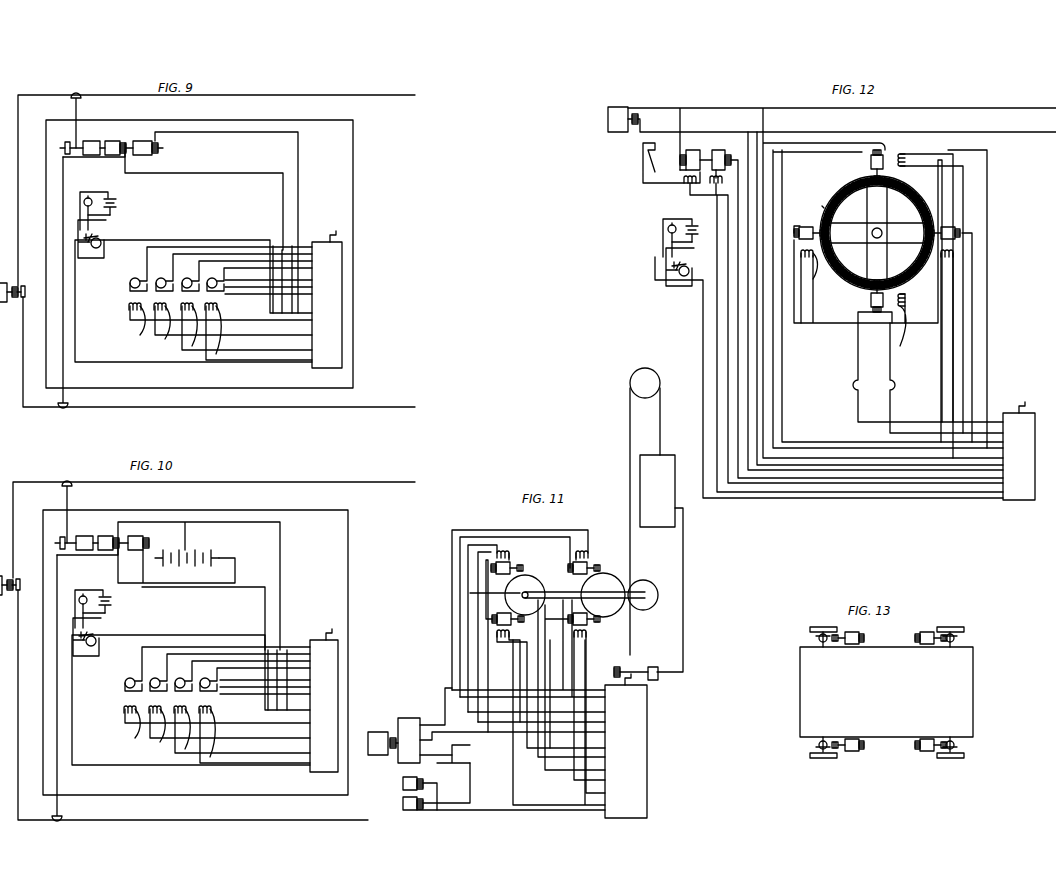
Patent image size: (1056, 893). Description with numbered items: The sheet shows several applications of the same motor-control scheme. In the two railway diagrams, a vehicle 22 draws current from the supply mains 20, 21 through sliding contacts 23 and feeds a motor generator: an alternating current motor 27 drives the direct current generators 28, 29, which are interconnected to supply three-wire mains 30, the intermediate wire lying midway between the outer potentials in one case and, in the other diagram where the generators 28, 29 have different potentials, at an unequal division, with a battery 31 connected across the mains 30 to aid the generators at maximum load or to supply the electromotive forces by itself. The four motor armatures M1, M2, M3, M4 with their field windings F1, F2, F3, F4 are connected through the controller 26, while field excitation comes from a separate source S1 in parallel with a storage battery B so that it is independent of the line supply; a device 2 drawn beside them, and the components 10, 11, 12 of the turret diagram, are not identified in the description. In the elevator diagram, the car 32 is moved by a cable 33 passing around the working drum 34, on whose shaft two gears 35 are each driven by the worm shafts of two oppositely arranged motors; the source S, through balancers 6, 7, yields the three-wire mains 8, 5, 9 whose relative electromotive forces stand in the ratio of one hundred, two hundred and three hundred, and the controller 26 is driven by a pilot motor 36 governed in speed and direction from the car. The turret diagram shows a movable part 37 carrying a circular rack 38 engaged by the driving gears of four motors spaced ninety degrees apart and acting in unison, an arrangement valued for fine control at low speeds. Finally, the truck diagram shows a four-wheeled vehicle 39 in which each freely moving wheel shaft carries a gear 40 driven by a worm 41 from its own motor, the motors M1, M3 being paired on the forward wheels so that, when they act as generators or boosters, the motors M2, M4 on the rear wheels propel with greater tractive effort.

In FIG. 9, the relay 2 is at (97, 239).
In FIG. 10, the relay 2 is at (91, 637).
In FIG. 12, the relay 2 is at (829, 373).
In FIG. 11, the main 5 is at (452, 768).
In FIG. 11, the balancer 6 is at (403, 784).
In FIG. 11, the balancer 7 is at (403, 804).
In FIG. 11, the main 8 is at (430, 700).
In FIG. 11, the main 9 is at (455, 812).
In FIG. 12, the relay 10 is at (696, 152).
In FIG. 12, the relay 11 is at (857, 314).
In FIG. 12, the relay coils 12 is at (712, 192).
In FIG. 9, the supply main 20 is at (216, 182).
In FIG. 10, the supply main 20 is at (214, 522).
In FIG. 9, the supply main 21 is at (152, 408).
In FIG. 10, the supply main 21 is at (193, 706).
In FIG. 9, the vehicle 22 is at (356, 209).
In FIG. 10, the vehicle 22 is at (214, 652).
In FIG. 9, the sliding contact 23 is at (82, 100).
In FIG. 10, the sliding contact 23 is at (79, 651).
In FIG. 9, the controller 26 is at (327, 299).
In FIG. 10, the controller 26 is at (324, 700).
In FIG. 11, the controller 26 is at (626, 746).
In FIG. 12, the controller 26 is at (1019, 451).
In FIG. 9, the alternating current motor 27 is at (92, 149).
In FIG. 10, the alternating current motor 27 is at (86, 545).
In FIG. 9, the direct current generator 28 is at (113, 148).
In FIG. 10, the direct current generator 28 is at (103, 532).
In FIG. 9, the direct current generator 29 is at (144, 148).
In FIG. 10, the direct current generator 29 is at (145, 537).
In FIG. 9, the three-wire mains 30 is at (212, 158).
In FIG. 10, the three-wire mains 30 is at (202, 616).
In FIG. 10, the battery 31 is at (187, 550).
In FIG. 11, the car 32 is at (661, 563).
In FIG. 11, the cable 33 is at (630, 437).
In FIG. 11, the working drum 34 is at (646, 586).
In FIG. 11, the gear 35 is at (565, 595).
In FIG. 11, the pilot motor 36 is at (653, 667).
In FIG. 12, the movable part 37 is at (877, 233).
In FIG. 12, the circular rack 38 is at (826, 206).
In FIG. 13, the truck 39 is at (886, 692).
In FIG. 13, the gear 40 is at (812, 636).
In FIG. 13, the worm 41 is at (822, 630).
In FIG. 9, the source S is at (12, 292).
In FIG. 10, the source S is at (10, 585).
In FIG. 11, the source S is at (383, 743).
In FIG. 12, the source S is at (624, 119).
In FIG. 9, the source of electrical energy S1 is at (87, 197).
In FIG. 10, the source of electrical energy S1 is at (87, 599).
In FIG. 12, the source of electrical energy S1 is at (668, 229).
In FIG. 9, the storage battery B is at (107, 205).
In FIG. 10, the storage battery B is at (102, 603).
In FIG. 12, the storage battery B is at (690, 233).
In FIG. 9, the motor armature M1 is at (134, 278).
In FIG. 10, the motor armature M1 is at (217, 669).
In FIG. 11, the motor armature M1 is at (512, 566).
In FIG. 12, the motor armature M1 is at (868, 155).
In FIG. 13, the motor armature M1 is at (862, 636).
In FIG. 9, the motor armature M2 is at (160, 278).
In FIG. 10, the motor armature M2 is at (230, 671).
In FIG. 11, the motor armature M2 is at (590, 566).
In FIG. 12, the motor armature M2 is at (951, 225).
In FIG. 13, the motor armature M2 is at (926, 632).
In FIG. 9, the motor armature M3 is at (186, 278).
In FIG. 10, the motor armature M3 is at (242, 671).
In FIG. 11, the motor armature M3 is at (500, 612).
In FIG. 12, the motor armature M3 is at (866, 298).
In FIG. 13, the motor armature M3 is at (852, 752).
In FIG. 9, the motor armature M4 is at (212, 278).
In FIG. 10, the motor armature M4 is at (255, 671).
In FIG. 11, the motor armature M4 is at (590, 625).
In FIG. 12, the motor armature M4 is at (800, 220).
In FIG. 13, the motor armature M4 is at (922, 751).
In FIG. 9, the field winding F1 is at (129, 308).
In FIG. 10, the field winding F1 is at (204, 722).
In FIG. 11, the field winding F1 is at (510, 552).
In FIG. 12, the field winding F1 is at (907, 155).
In FIG. 9, the field winding F2 is at (150, 312).
In FIG. 10, the field winding F2 is at (212, 726).
In FIG. 11, the field winding F2 is at (587, 548).
In FIG. 12, the field winding F2 is at (960, 254).
In FIG. 9, the field winding F3 is at (180, 312).
In FIG. 10, the field winding F3 is at (228, 733).
In FIG. 11, the field winding F3 is at (512, 630).
In FIG. 12, the field winding F3 is at (898, 312).
In FIG. 9, the field winding F4 is at (217, 304).
In FIG. 10, the field winding F4 is at (254, 730).
In FIG. 11, the field winding F4 is at (590, 648).
In FIG. 12, the field winding F4 is at (816, 263).